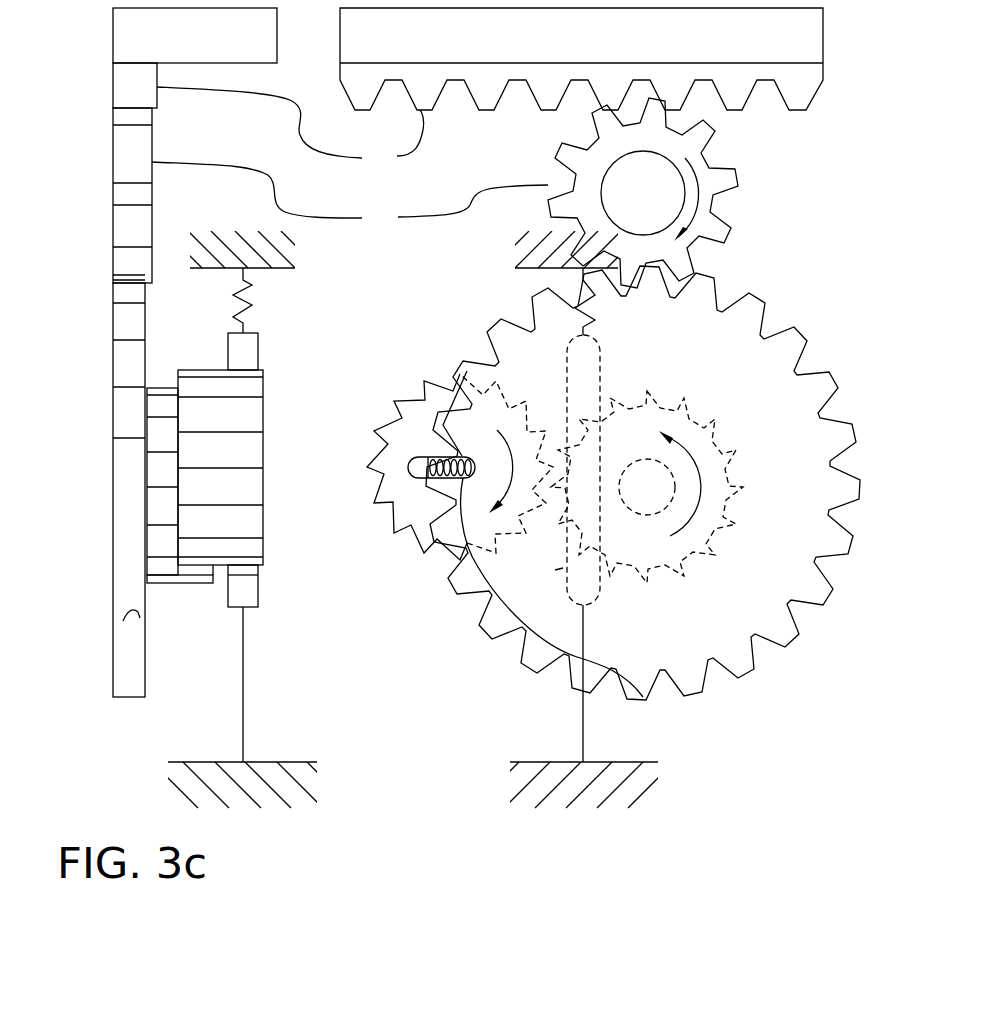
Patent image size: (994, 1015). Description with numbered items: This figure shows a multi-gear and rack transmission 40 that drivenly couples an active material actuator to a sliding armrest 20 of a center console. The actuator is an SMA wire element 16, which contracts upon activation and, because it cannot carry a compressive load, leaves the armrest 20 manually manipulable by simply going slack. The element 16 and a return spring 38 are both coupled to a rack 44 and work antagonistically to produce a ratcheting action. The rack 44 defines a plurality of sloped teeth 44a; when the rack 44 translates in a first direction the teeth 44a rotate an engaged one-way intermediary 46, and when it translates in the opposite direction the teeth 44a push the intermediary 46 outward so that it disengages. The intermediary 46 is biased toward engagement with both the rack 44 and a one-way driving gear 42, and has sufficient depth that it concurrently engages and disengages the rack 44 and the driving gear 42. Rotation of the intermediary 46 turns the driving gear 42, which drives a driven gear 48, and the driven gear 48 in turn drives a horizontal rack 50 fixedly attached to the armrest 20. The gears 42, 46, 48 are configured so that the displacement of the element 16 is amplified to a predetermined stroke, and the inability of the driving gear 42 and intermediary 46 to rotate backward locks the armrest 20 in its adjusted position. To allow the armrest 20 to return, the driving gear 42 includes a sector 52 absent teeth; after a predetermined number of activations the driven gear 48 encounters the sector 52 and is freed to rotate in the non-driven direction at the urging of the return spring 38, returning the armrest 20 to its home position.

The active material element 16 is at (243, 727).
The sliding armrest 20 is at (213, 45).
The return spring 38 is at (580, 283).
The gear transmission 40 is at (786, 266).
The one-way driving gear 42 is at (658, 363).
The rack 44 is at (258, 607).
The sloped teeth 44a is at (560, 570).
The one-way intermediary 46 is at (263, 545).
The driven gear 48 is at (350, 196).
The horizontal rack 50 is at (290, 127).
The sector absent teeth 52 is at (140, 618).